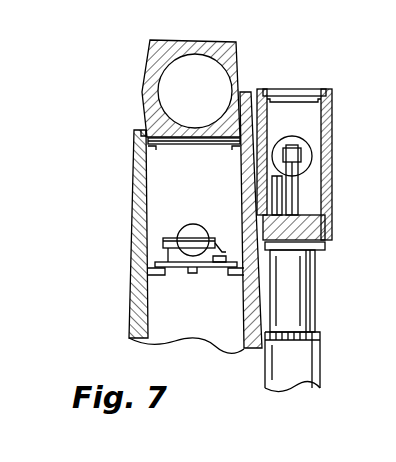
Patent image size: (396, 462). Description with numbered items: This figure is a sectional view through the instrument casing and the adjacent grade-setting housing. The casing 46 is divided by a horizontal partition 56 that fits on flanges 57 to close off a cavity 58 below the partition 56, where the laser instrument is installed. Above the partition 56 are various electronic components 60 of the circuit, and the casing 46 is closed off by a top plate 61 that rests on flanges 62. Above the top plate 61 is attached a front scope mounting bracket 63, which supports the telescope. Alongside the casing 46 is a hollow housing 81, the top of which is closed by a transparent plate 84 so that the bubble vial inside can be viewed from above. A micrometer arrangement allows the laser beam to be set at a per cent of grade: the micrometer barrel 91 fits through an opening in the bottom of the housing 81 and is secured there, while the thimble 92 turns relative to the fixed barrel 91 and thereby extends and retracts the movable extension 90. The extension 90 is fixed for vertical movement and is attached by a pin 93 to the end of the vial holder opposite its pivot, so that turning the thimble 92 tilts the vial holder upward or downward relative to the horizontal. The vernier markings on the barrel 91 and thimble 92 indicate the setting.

The casing 46 is at (129, 265).
The horizontal partition 56 is at (188, 272).
The flanges 57 is at (160, 282).
The cavity 58 is at (220, 342).
The electronic components 60 is at (188, 229).
The top plate 61 is at (178, 146).
The flanges 62 is at (156, 147).
The front scope mounting bracket 63 is at (237, 50).
The hollow housing 81 is at (331, 162).
The transparent plate 84 is at (294, 90).
The movable extension 90 is at (300, 190).
The micrometer barrel 91 is at (298, 290).
The thimble 92 is at (300, 355).
The pin 93 is at (302, 152).